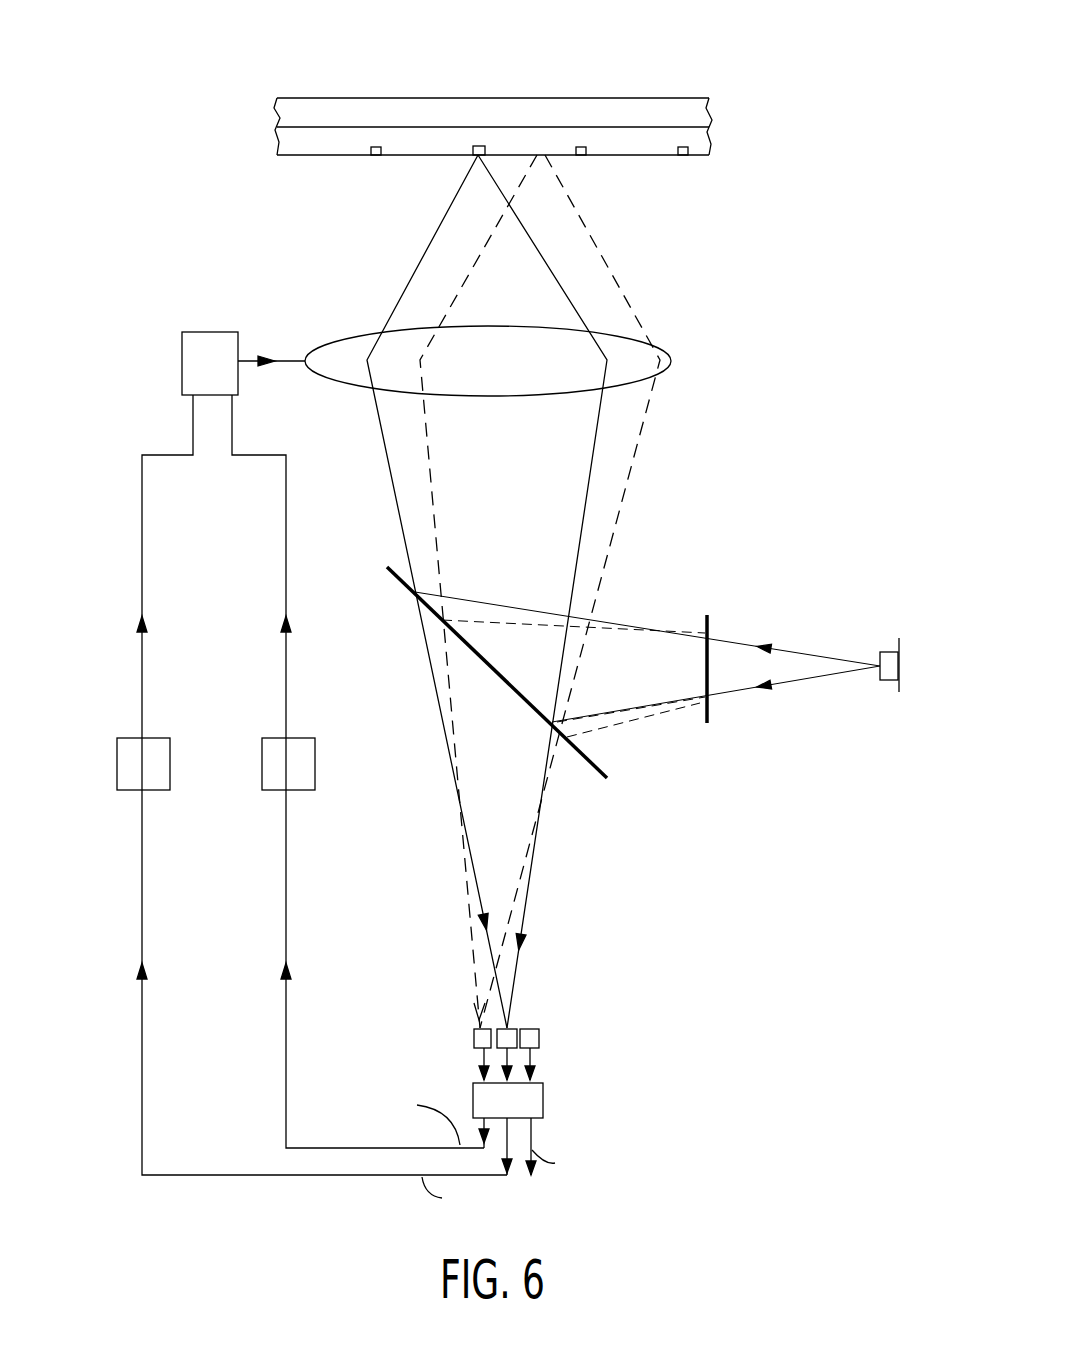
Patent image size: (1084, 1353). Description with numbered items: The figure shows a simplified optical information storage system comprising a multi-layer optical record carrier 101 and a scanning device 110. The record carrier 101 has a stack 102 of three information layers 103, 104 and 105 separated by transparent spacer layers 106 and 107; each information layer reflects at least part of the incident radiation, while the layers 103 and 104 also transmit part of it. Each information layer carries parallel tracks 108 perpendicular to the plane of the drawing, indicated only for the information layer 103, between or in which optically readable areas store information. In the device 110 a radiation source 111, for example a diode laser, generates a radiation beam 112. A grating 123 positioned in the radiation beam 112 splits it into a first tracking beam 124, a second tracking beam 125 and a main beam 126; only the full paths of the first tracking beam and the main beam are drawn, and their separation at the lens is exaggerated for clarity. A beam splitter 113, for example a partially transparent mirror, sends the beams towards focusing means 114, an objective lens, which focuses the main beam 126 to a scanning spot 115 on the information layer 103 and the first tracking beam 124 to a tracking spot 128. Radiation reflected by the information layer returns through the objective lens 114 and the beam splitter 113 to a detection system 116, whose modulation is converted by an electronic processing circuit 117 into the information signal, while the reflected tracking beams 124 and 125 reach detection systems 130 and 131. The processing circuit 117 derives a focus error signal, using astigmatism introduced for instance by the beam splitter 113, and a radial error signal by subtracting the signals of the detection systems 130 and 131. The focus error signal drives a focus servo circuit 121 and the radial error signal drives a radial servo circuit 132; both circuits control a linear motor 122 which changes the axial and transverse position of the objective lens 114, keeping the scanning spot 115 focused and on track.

The multi-layer optical record carrier 101 is at (580, 52).
The stack 102 is at (792, 48).
The information layer 103 is at (697, 156).
The information layer 104 is at (697, 126).
The information layer 105 is at (697, 98).
The transparent spacer layer 106 is at (697, 139).
The transparent spacer layer 107 is at (695, 110).
The tracks 108 is at (373, 156).
The device 110 is at (811, 484).
The radiation source 111 is at (888, 648).
The radiation beam 112 is at (762, 646).
The beam splitter 113 is at (396, 573).
The focusing means 114 is at (357, 342).
The scanning spot 115 is at (477, 158).
The detection system 116 is at (512, 1042).
The electronic processing circuit 117 is at (532, 1105).
The focus servo circuit 121 is at (135, 748).
The linear motor 122 is at (205, 368).
The grating 123 is at (711, 621).
The first tracking beam 124 is at (433, 502).
The second tracking beam 125 is at (653, 623).
The main beam 126 is at (388, 456).
The tracking spot 128 is at (537, 158).
The detection system 130 is at (483, 1042).
The detection system 131 is at (532, 1038).
The radial servo circuit 132 is at (297, 748).